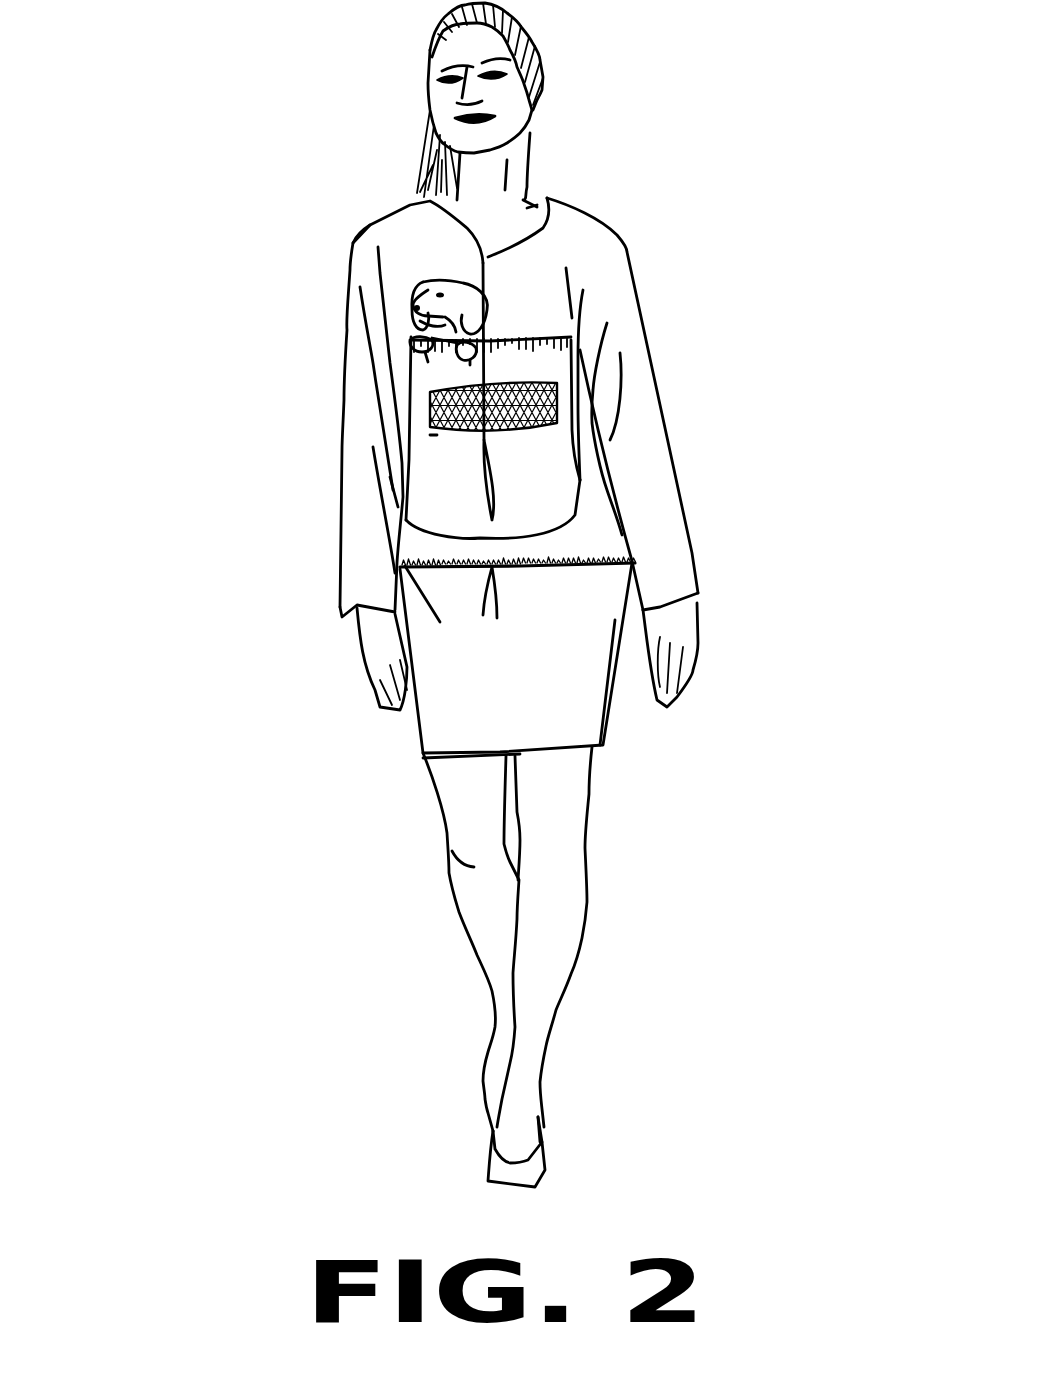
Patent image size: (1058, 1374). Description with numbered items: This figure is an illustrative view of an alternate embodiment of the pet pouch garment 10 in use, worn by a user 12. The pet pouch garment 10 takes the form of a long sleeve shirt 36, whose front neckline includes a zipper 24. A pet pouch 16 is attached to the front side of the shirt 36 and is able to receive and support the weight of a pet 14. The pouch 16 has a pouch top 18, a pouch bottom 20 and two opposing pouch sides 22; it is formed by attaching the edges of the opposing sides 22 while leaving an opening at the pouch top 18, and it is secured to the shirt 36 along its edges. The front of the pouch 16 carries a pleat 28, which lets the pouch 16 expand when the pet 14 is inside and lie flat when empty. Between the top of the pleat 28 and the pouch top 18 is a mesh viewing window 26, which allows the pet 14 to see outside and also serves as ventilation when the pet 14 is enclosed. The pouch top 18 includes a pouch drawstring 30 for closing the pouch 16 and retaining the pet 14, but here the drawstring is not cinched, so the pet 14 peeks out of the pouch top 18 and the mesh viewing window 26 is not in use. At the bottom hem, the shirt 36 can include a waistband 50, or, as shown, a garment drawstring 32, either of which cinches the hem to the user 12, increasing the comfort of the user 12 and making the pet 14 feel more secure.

The pet pouch garment 10 is at (303, 198).
The user 12 is at (540, 60).
The pet 14 is at (430, 293).
The pet pouch 16 is at (437, 435).
The pouch top 18 is at (486, 378).
The pouch bottom 20 is at (645, 598).
The pouch sides 22 is at (521, 412).
The zipper 24 is at (545, 224).
The mesh viewing window 26 is at (560, 410).
The pleat 28 is at (487, 480).
The pouch drawstring 30 is at (437, 390).
The garment drawstring 32 is at (483, 597).
The long sleeve shirt 36 is at (393, 222).
The waistband 50 is at (570, 567).